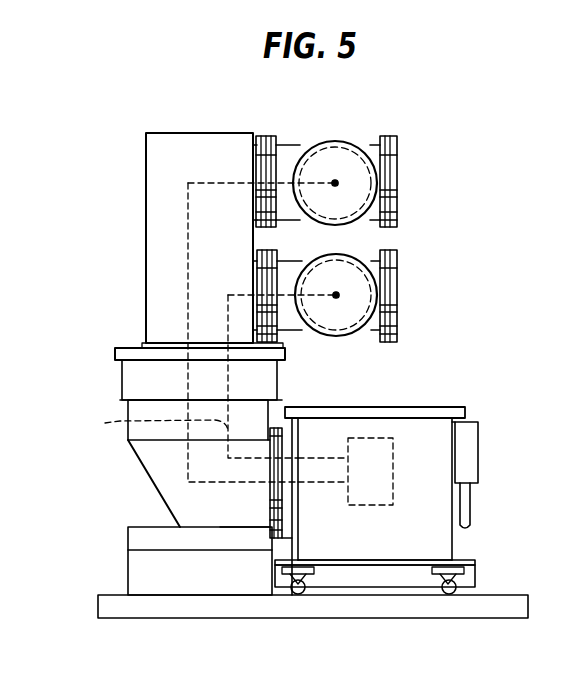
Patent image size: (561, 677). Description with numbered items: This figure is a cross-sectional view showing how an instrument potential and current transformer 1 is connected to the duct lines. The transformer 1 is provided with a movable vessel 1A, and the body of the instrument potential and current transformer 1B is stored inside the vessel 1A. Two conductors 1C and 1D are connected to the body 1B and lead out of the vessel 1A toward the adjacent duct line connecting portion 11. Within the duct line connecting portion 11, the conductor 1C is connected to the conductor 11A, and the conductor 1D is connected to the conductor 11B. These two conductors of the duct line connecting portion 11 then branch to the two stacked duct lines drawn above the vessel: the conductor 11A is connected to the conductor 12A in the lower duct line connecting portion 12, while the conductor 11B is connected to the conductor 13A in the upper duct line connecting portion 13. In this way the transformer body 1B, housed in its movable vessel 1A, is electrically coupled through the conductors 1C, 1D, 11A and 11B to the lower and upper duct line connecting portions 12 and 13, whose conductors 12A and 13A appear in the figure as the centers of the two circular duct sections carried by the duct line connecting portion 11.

The instrument potential and current transformer 1 is at (438, 398).
The movable vessel 1A is at (440, 442).
The body of the instrument potential and current transformer 1B is at (396, 492).
The conductor 1C is at (308, 455).
The conductor 1D is at (348, 492).
The duct line connecting portion 11 is at (146, 312).
The conductor 11A is at (145, 424).
The conductor 11B is at (188, 472).
The lower duct line connecting portion 12 is at (358, 255).
The conductor 12A is at (336, 295).
The upper duct line connecting portion 13 is at (338, 140).
The conductor 13A is at (335, 183).